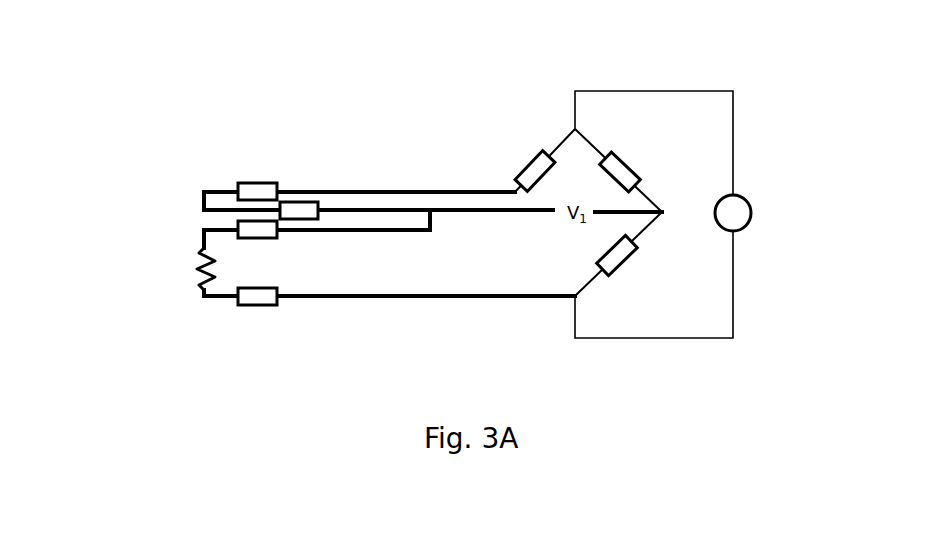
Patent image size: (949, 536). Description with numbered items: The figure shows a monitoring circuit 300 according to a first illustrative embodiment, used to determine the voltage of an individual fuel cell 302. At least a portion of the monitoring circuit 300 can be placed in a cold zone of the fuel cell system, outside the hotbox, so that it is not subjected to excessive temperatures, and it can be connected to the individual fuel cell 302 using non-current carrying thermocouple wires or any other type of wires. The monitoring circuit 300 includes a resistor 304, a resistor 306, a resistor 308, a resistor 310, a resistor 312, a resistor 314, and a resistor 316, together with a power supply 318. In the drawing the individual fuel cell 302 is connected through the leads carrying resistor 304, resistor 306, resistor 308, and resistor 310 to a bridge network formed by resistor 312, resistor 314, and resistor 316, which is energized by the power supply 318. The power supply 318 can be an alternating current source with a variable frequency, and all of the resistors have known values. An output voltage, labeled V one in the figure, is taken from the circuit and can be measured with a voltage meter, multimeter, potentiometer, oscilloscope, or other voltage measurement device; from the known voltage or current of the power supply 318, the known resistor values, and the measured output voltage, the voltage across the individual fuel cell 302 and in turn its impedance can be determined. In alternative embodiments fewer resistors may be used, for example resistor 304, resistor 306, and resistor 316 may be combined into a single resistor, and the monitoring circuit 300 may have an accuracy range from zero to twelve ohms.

The monitoring circuit 300 is at (812, 80).
The individual fuel cell 302 is at (202, 262).
The resistor 304 is at (253, 182).
The resistor 306 is at (315, 200).
The resistor 308 is at (262, 239).
The resistor 310 is at (245, 307).
The resistor 312 is at (625, 263).
The resistor 314 is at (630, 163).
The resistor 316 is at (523, 163).
The power supply 318 is at (752, 203).